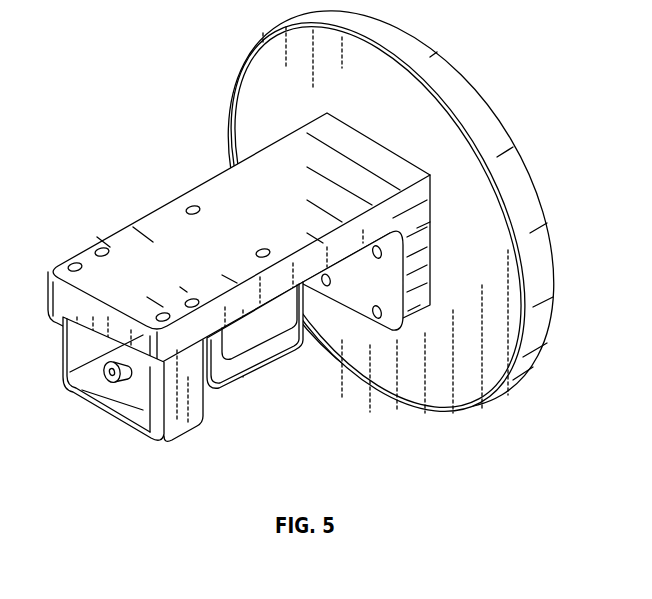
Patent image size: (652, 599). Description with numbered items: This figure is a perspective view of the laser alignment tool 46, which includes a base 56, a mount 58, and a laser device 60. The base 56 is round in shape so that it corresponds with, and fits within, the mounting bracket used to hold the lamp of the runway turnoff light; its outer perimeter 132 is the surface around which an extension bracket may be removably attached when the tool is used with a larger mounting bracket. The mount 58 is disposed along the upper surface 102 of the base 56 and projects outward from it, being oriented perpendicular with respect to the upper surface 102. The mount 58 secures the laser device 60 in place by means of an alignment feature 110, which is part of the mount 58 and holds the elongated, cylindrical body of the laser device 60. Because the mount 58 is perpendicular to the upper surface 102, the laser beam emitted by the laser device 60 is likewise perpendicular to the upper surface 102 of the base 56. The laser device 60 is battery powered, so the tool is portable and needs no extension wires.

The laser alignment tool 46 is at (391, 233).
The base 56 is at (492, 292).
The outer perimeter 132 is at (523, 197).
The mount 58 is at (153, 222).
The upper surface 102 is at (473, 274).
The alignment feature 110 is at (267, 355).
The laser device 60 is at (132, 372).